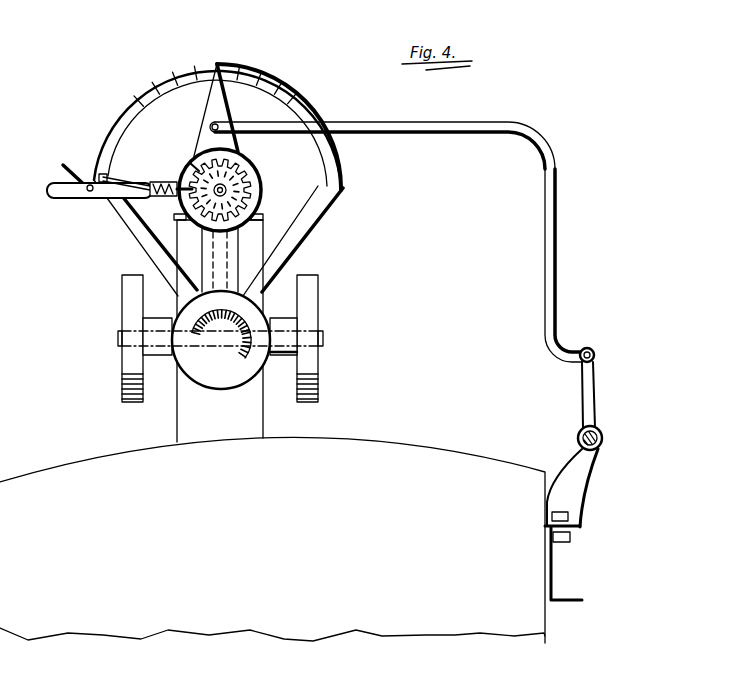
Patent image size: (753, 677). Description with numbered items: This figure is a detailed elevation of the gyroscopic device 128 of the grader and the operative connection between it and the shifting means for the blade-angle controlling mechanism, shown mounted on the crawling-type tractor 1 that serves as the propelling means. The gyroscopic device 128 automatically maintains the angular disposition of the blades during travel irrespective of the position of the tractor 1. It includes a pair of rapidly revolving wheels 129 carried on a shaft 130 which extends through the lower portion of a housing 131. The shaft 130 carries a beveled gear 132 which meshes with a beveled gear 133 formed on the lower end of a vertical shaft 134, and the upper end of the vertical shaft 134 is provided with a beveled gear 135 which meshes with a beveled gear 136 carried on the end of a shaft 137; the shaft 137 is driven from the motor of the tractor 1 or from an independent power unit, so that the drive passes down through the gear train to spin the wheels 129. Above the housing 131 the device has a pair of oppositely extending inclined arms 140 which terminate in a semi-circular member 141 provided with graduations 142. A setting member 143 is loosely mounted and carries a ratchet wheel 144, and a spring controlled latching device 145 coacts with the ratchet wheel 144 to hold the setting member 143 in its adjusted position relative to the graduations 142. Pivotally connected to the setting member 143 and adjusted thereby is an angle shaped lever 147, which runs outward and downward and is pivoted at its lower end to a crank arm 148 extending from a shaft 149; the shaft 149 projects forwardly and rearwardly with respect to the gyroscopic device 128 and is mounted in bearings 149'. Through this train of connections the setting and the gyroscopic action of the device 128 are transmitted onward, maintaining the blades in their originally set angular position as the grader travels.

The tractor 1 is at (470, 562).
The gyroscopic device 128 is at (124, 106).
The rapidly revolving wheels 129 is at (133, 290).
The shaft 130 is at (119, 338).
The housing 131 is at (202, 367).
The beveled gear 132 is at (247, 365).
The beveled gear 133 is at (233, 327).
The vertical shaft 134 is at (216, 244).
The beveled gear 135 is at (257, 207).
The beveled gear 136 is at (247, 177).
The shaft 137 is at (251, 191).
The inclined arms 140 is at (290, 240).
The semi-circular member 141 is at (279, 126).
The graduations 142 is at (245, 67).
The setting member 143 is at (257, 160).
The ratchet wheel 144 is at (192, 160).
The spring controlled latching device 145 is at (157, 181).
The angle shaped lever 147 is at (427, 121).
The crank arm 148 is at (590, 383).
The shaft 149 is at (633, 429).
The bearings 149' is at (609, 488).